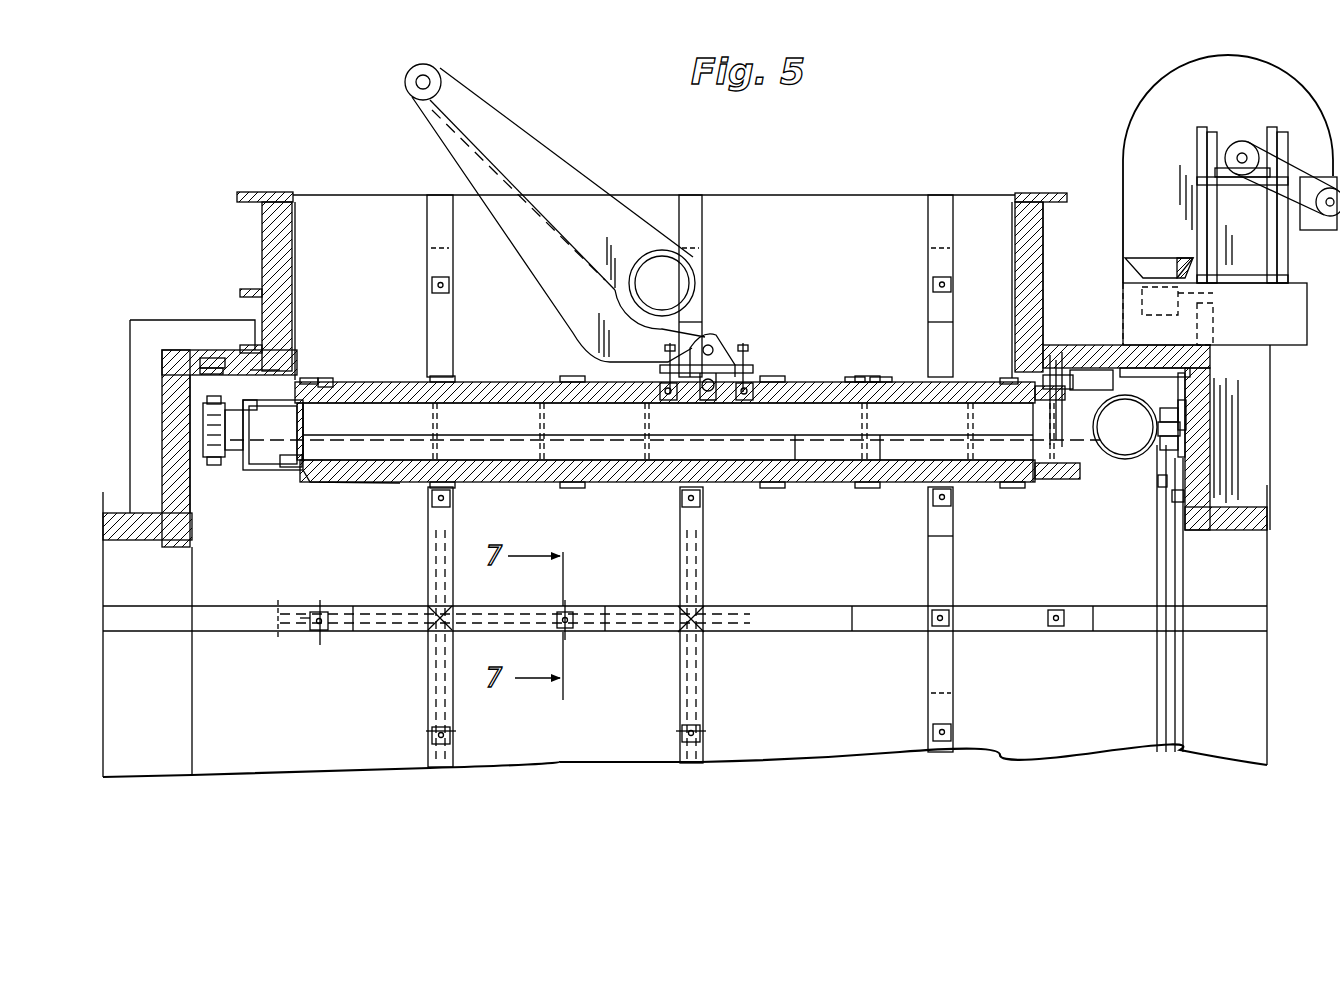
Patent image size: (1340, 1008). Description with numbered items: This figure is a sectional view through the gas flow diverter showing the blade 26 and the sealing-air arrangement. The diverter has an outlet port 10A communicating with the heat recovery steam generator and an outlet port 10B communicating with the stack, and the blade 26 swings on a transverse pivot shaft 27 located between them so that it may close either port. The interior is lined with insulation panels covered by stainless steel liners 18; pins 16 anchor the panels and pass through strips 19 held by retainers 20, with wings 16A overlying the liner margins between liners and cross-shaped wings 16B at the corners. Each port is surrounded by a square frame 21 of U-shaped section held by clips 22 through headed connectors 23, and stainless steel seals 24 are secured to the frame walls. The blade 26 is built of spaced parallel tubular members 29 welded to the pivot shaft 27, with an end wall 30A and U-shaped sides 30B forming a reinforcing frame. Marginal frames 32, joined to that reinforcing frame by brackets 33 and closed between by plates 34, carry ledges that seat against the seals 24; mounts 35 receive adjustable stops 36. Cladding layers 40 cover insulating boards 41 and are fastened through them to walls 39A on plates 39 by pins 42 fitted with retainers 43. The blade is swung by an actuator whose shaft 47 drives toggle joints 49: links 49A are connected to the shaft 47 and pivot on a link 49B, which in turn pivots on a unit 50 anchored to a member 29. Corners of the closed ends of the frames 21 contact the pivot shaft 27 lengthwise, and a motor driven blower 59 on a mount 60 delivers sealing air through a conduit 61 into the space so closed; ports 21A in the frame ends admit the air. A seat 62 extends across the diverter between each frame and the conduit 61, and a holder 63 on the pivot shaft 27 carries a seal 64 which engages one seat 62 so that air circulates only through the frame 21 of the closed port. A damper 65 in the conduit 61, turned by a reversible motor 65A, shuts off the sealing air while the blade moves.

The diverter port 10A is at (1250, 672).
The diverter port 10B is at (880, 198).
The pins 16 is at (560, 608).
The wings 16A is at (325, 638).
The wings 16B is at (432, 635).
The stainless steel liner 18 is at (800, 703).
The strips 19 is at (292, 633).
The retainers 20 is at (577, 625).
The frame 21 is at (200, 390).
The ports 21A is at (1185, 392).
The clips 22 is at (202, 358).
The headed connectors 23 is at (210, 368).
The stainless steel seals 24 is at (1052, 390).
The blade 26 is at (392, 490).
The pivot shaft 27 is at (1183, 410).
The tubular members 29 is at (512, 458).
The end wall 30A is at (1058, 472).
The frame sides 30B is at (327, 473).
The marginal frames 32 is at (304, 378).
The brackets 33 is at (328, 380).
The plates 34 is at (240, 445).
The mounts 35 is at (203, 432).
The adjustable stops 36 is at (205, 410).
The plates 39 is at (892, 462).
The walls 39A is at (832, 462).
The surface layers 40 is at (900, 380).
The board 41 is at (800, 380).
The pins 42 is at (880, 376).
The retainers 43 is at (860, 376).
The shaft 47 is at (696, 270).
The toggle joints 49 is at (560, 168).
The links 49A is at (582, 182).
The toggle joint link 49B is at (526, 262).
The unit 50 is at (728, 337).
The motor driven blower 59 is at (1140, 102).
The mount 60 is at (1108, 290).
The conduit 61 is at (1215, 358).
The seat 62 is at (1180, 376).
The holder 63 is at (1142, 432).
The seal 64 is at (1182, 426).
The damper or valve 65 is at (1163, 285).
The reversible motor 65A is at (1213, 330).